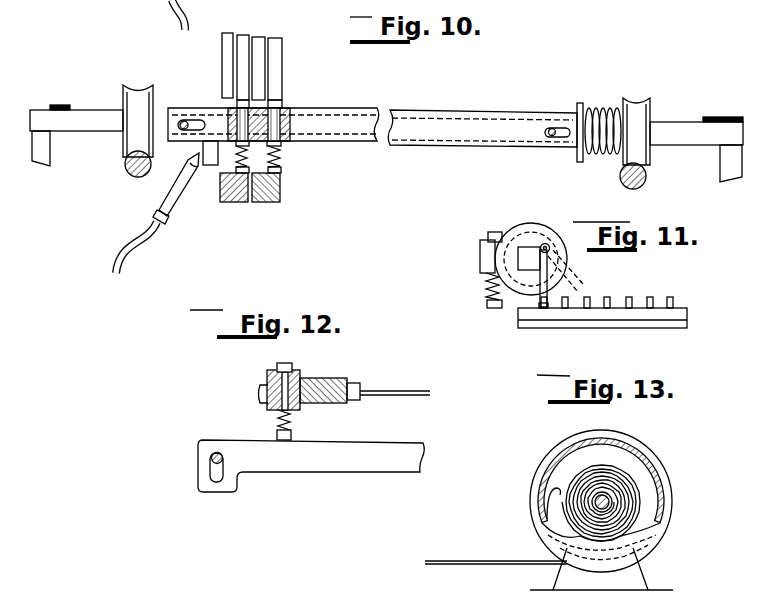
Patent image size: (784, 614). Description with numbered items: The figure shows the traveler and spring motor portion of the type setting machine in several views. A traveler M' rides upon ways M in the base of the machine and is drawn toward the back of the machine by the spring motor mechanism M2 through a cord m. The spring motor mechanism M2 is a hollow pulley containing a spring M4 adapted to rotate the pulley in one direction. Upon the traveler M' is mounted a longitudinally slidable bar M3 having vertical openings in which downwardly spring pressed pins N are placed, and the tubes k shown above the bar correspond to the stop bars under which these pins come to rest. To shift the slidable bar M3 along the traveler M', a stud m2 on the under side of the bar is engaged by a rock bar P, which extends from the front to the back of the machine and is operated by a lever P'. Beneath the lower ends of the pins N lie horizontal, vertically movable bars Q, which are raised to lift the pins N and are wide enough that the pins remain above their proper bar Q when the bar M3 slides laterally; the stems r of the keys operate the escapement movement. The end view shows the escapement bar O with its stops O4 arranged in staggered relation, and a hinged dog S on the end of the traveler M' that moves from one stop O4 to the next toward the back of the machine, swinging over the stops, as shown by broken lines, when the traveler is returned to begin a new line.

In FIG. 10, the traveler M' is at (386, 110).
In FIG. 11, the traveler M' is at (513, 286).
In FIG. 12, the traveler M' is at (330, 375).
In FIG. 10, the ways M is at (390, 137).
In FIG. 10, the hinged dogs S is at (38, 165).
In FIG. 11, the hinged dogs S is at (553, 275).
In FIG. 10, the rock bar P is at (157, 211).
In FIG. 10, the lever P' is at (131, 130).
In FIG. 10, the tubes k is at (273, 38).
In FIG. 10, the stems of the keys r is at (290, 108).
In FIG. 10, the stud m2 is at (210, 167).
In FIG. 10, the horizontal vertically movable bars Q is at (281, 192).
In FIG. 12, the horizontal vertically movable bars Q is at (311, 466).
In FIG. 10, the bar M3 is at (418, 163).
In FIG. 11, the bar M3 is at (480, 250).
In FIG. 11, the spring pressed pins N is at (496, 232).
In FIG. 12, the spring pressed pins N is at (289, 370).
In FIG. 11, the escapement bars O is at (540, 332).
In FIG. 11, the stops O4 is at (607, 297).
In FIG. 12, the cord m is at (382, 392).
In FIG. 13, the cord m is at (458, 566).
In FIG. 13, the spring motor mechanism M2 is at (641, 440).
In FIG. 13, the spring M4 is at (643, 492).